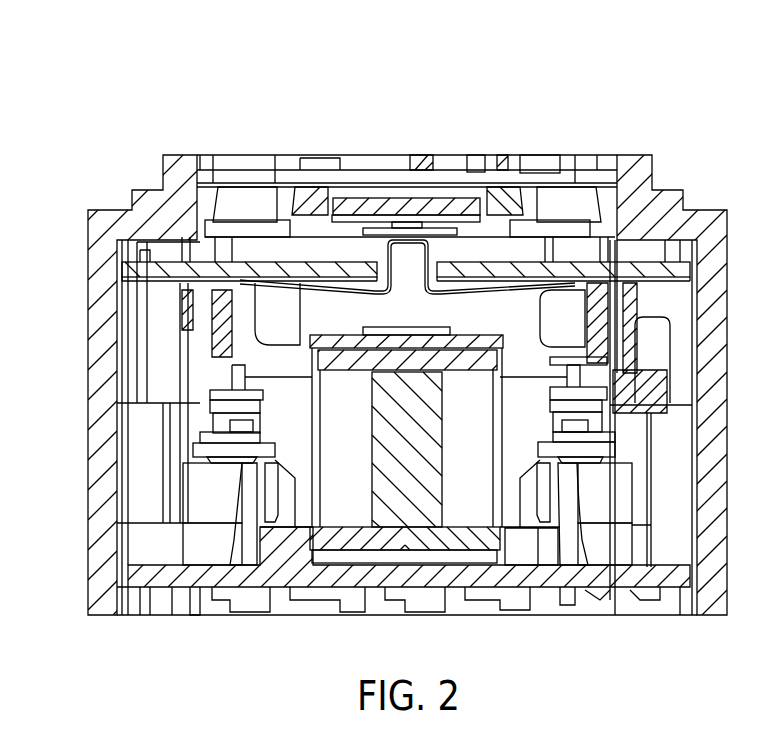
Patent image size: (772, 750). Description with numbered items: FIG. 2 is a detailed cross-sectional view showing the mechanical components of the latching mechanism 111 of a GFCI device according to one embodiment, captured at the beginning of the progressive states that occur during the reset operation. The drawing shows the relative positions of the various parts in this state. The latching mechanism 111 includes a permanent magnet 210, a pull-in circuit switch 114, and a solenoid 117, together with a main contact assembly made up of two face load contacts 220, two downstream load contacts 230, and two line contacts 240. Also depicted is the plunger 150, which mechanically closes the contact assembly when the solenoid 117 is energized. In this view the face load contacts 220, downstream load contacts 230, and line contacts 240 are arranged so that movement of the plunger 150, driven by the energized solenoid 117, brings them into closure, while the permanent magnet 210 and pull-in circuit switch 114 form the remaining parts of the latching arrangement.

The latching mechanism 111 is at (288, 92).
The pull-in circuit switch 114 is at (508, 288).
The solenoid 117 is at (462, 517).
The plunger 150 is at (410, 298).
The permanent magnet 210 is at (447, 215).
The face load contacts 220 is at (250, 360).
The downstream load contacts 230 is at (203, 405).
The line contacts 240 is at (218, 458).